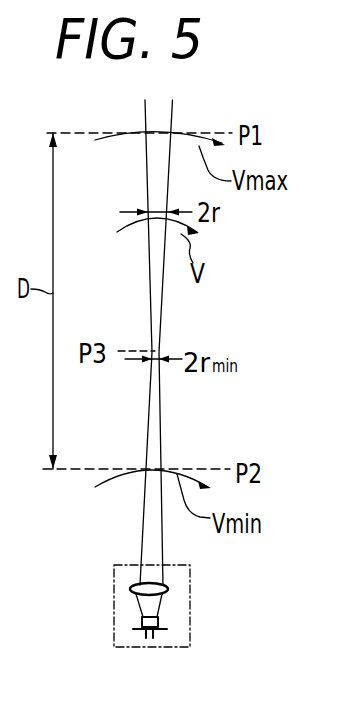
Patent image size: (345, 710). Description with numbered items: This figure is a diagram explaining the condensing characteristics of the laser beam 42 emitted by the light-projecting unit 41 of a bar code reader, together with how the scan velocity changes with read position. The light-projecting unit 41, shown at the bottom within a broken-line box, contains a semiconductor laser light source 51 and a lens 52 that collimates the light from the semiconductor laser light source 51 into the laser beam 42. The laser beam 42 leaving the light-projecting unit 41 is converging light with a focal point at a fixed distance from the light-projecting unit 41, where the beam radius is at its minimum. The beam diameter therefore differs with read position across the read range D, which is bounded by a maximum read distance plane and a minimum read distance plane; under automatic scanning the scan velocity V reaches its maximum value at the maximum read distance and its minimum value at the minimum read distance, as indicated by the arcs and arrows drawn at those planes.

The light-projecting unit 41 is at (133, 647).
The laser beam 42 is at (150, 436).
The semiconductor laser light source 51 is at (158, 623).
The lens 52 is at (166, 592).